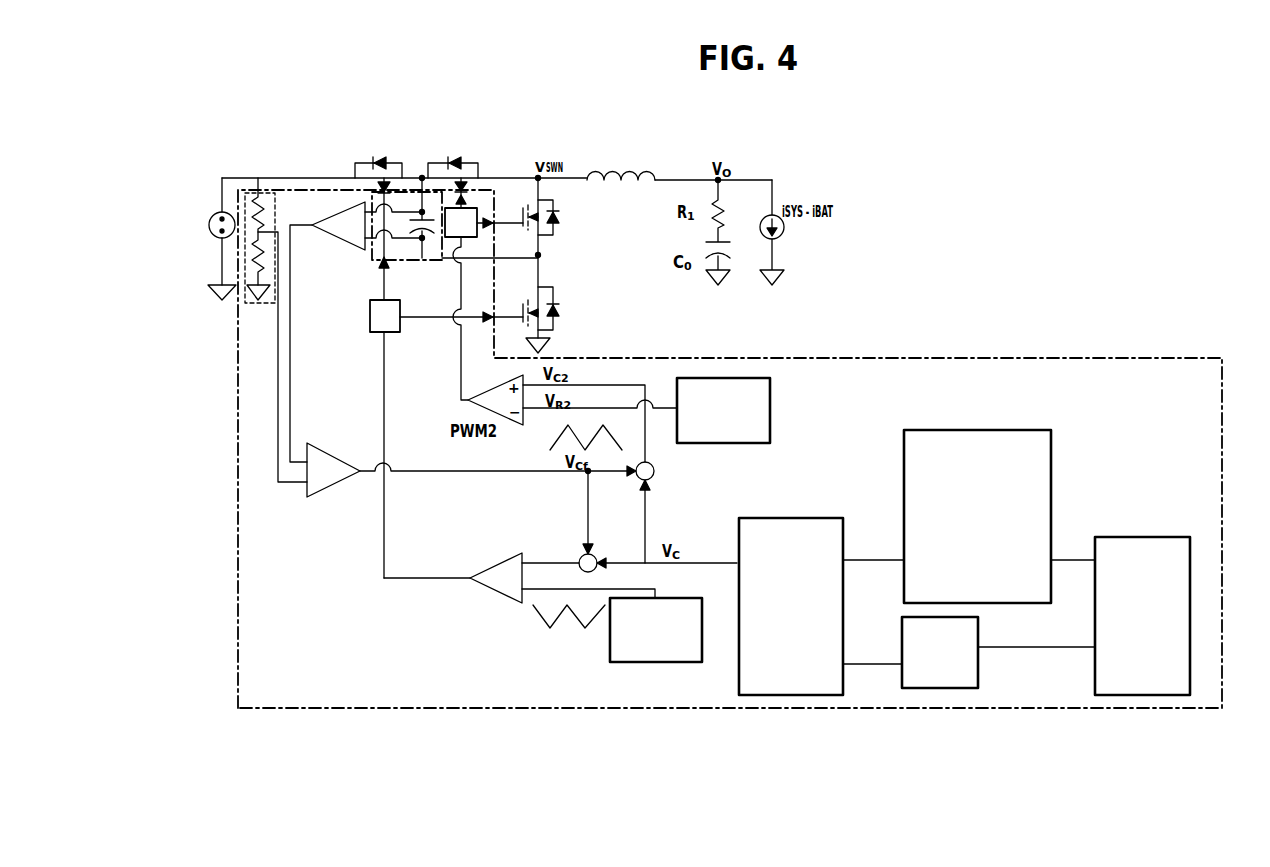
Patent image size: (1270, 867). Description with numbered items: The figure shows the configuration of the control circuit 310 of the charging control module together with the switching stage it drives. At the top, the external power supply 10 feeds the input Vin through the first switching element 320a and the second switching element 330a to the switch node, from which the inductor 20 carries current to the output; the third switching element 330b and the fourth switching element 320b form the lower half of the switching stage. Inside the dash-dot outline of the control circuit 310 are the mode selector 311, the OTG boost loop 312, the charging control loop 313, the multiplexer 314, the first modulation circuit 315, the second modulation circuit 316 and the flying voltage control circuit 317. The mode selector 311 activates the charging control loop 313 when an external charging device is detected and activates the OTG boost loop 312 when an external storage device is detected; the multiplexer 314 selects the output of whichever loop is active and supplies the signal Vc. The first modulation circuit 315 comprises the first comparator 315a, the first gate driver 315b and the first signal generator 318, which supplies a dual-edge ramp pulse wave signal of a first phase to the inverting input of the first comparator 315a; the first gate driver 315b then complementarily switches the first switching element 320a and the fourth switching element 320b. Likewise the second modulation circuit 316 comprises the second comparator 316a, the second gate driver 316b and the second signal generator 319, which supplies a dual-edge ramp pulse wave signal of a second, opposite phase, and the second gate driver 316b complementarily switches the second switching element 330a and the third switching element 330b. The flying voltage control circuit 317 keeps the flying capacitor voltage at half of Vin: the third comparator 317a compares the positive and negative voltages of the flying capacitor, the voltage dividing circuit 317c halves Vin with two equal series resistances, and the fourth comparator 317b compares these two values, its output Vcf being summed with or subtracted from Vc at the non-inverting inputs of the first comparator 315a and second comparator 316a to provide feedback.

The external power supply 10 is at (214, 214).
The inductor 20 is at (646, 172).
The control circuit 310 is at (1193, 358).
The mode selector 311 is at (1143, 695).
The OTG boost loop 312 is at (940, 688).
The charging control loop 313 is at (994, 430).
The multiplexer 314 is at (790, 695).
The first modulation circuit 315 is at (292, 772).
The first comparator 315a is at (527, 606).
The first gate driver 315b is at (370, 324).
The second modulation circuit 316 is at (292, 827).
The second comparator 316a is at (549, 352).
The second gate driver 316b is at (494, 197).
The flying voltage control circuit 317 is at (430, 793).
The third comparator 317a is at (323, 217).
The fourth comparator 317b is at (305, 492).
The voltage dividing circuit 317c is at (259, 193).
The first signal generator 318 is at (640, 662).
The second signal generator 319 is at (770, 410).
The first switching element 320a is at (385, 158).
The fourth switching element 320b is at (557, 291).
The second switching element 330a is at (436, 158).
The third switching element 330b is at (551, 194).